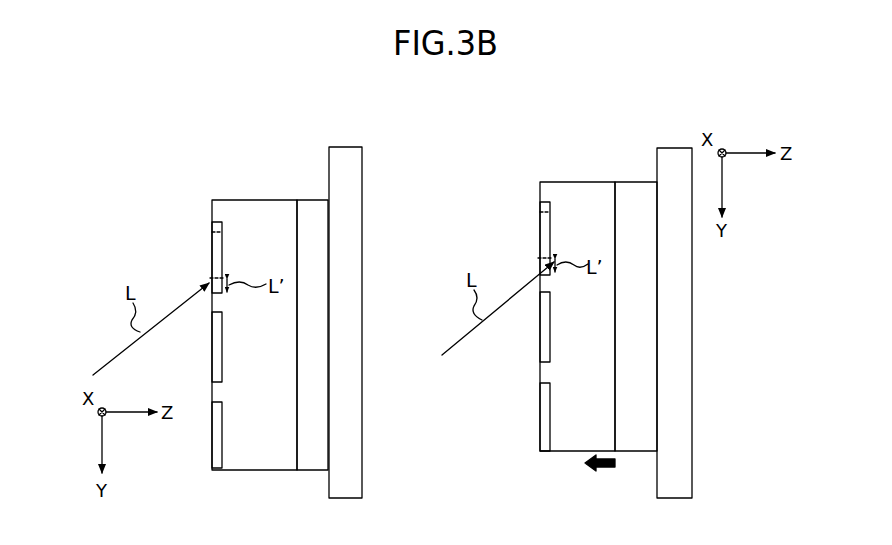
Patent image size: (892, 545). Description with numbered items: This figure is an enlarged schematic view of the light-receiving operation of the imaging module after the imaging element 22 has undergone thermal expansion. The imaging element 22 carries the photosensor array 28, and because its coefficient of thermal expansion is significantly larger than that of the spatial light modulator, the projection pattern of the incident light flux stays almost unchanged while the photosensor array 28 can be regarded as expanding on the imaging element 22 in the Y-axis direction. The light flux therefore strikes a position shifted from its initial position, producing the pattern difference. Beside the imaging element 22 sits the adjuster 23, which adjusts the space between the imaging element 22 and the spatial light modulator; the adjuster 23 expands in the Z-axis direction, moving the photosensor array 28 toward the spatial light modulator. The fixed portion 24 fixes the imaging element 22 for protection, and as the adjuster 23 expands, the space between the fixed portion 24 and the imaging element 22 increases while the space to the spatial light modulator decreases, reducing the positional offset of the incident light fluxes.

The imaging element 22 is at (254, 200).
The adjuster 23 is at (304, 200).
The fixed portion 24 is at (356, 270).
The photosensor array 28 is at (212, 230).